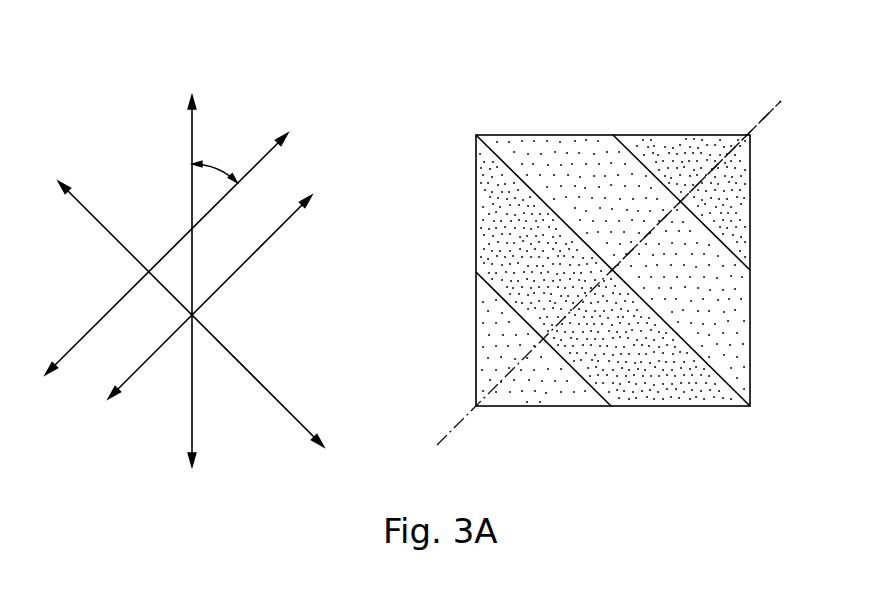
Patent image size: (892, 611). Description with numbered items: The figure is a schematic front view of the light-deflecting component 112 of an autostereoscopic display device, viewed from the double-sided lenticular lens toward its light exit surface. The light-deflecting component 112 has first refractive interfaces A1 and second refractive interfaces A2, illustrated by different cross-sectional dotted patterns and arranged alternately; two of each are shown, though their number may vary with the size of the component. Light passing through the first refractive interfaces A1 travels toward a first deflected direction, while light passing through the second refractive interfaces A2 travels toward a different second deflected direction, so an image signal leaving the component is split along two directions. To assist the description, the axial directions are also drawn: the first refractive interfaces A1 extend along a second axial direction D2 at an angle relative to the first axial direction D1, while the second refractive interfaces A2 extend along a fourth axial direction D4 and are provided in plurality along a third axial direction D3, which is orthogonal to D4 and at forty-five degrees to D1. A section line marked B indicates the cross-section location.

The first axial direction D1 is at (192, 141).
The second axial direction D2 is at (259, 160).
The third axial direction D3 is at (268, 240).
The fourth axial direction D4 is at (263, 388).
The light-deflecting component 112 is at (468, 74).
The first refractive interface A1 is at (485, 351).
The second refractive interface A2 is at (558, 276).
The section line end B is at (609, 300).